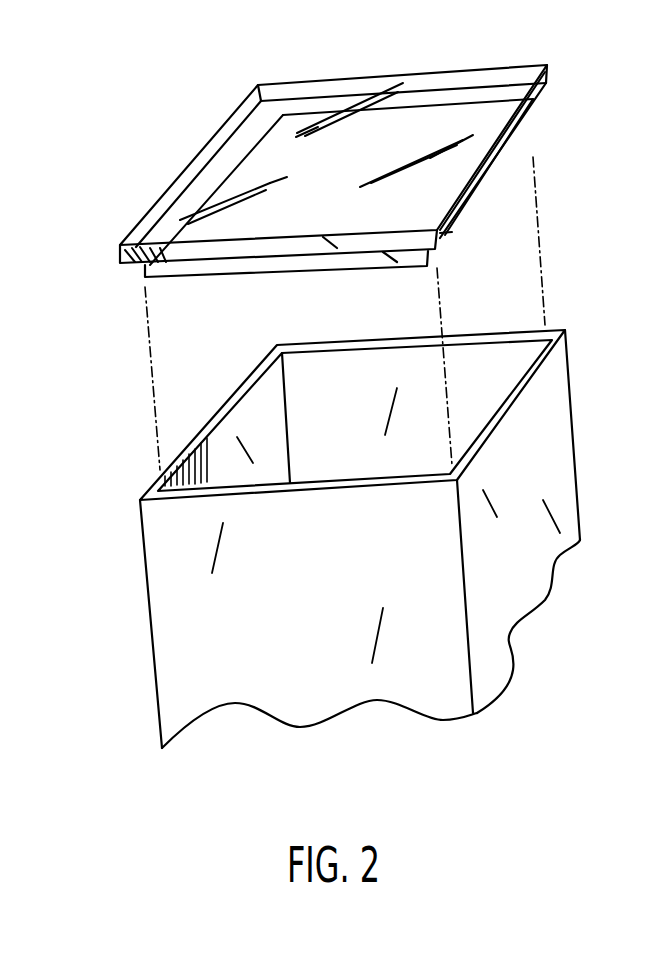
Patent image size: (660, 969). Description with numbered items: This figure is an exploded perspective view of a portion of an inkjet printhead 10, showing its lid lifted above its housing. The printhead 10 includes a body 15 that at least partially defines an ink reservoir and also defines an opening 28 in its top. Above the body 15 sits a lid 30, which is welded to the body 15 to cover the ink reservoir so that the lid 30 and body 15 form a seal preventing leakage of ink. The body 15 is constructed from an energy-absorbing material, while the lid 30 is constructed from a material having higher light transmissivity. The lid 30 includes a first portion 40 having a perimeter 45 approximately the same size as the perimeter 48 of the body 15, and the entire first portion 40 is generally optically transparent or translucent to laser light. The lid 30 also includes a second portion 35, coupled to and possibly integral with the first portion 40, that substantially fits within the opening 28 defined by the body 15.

The printhead 10 is at (100, 768).
The body 15 is at (146, 613).
The opening 28 is at (207, 425).
The lid 30 is at (547, 65).
The second portion 35 is at (433, 263).
The first portion 40 is at (543, 90).
The perimeter 45 is at (291, 85).
The perimeter 48 is at (315, 345).